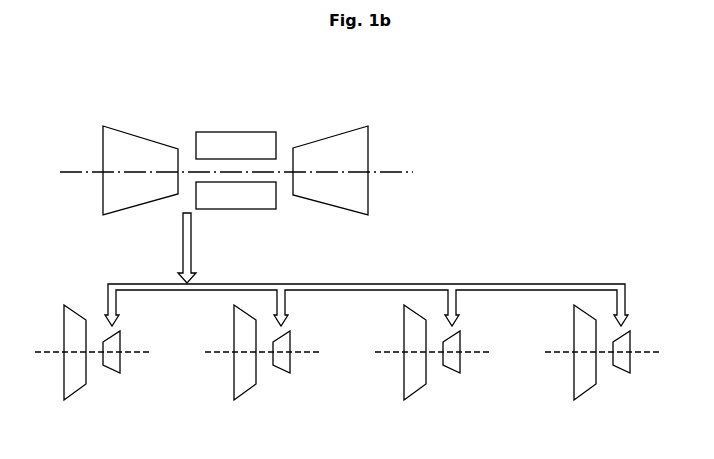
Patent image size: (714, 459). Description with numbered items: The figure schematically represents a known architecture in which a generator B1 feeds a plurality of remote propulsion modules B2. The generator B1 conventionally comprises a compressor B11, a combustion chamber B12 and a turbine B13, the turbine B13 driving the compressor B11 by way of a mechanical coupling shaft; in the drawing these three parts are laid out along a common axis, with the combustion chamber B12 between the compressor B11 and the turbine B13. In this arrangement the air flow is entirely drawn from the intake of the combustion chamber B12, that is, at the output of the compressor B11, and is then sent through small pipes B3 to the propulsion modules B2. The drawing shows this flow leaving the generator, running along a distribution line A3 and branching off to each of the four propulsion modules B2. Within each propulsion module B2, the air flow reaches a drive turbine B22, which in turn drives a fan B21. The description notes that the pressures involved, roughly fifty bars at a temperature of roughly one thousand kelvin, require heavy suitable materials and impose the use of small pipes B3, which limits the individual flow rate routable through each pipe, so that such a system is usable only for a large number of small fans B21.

The generator B1 is at (236, 133).
The compressor B11 is at (143, 130).
The combustion chamber B12 is at (237, 124).
The turbine B13 is at (327, 129).
The small pipes B3 is at (200, 237).
The exhaust gas distribution line A3 is at (464, 221).
The propulsion modules B2 is at (342, 366).
The fans B21 is at (59, 336).
The drive turbines B22 is at (129, 341).